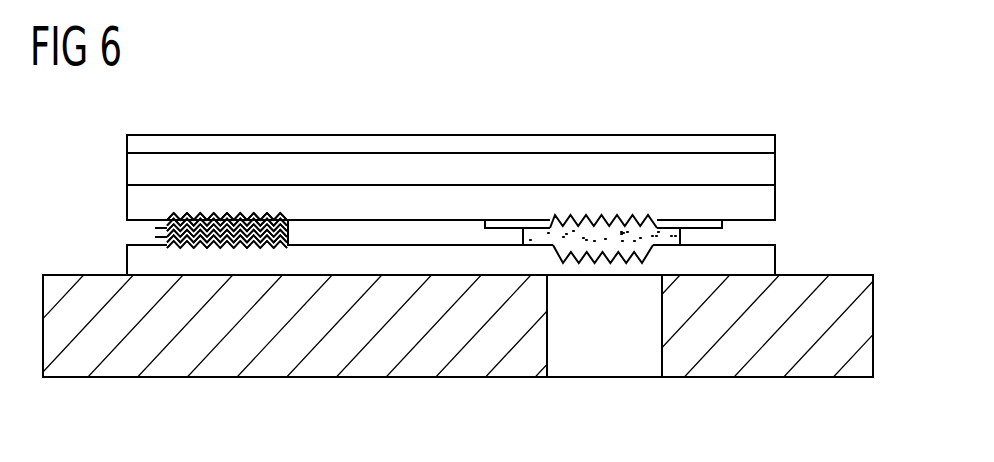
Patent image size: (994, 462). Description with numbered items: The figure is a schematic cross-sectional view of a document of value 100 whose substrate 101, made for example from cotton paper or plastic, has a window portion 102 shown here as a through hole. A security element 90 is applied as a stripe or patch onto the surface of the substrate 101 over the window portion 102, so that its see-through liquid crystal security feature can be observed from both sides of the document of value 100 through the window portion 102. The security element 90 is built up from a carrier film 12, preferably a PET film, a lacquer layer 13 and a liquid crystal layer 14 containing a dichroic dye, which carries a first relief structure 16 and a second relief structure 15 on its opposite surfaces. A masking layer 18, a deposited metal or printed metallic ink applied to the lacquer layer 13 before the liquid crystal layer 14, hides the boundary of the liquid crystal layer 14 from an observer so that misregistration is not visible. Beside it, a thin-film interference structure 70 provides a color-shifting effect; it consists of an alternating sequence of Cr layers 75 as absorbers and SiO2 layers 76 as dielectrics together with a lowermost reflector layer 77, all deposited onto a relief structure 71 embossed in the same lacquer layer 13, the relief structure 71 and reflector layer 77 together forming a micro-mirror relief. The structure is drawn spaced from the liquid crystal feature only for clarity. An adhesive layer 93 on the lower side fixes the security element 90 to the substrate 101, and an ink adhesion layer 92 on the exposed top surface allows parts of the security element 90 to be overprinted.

The document of value 100 is at (897, 151).
The security element 90 is at (848, 122).
The ink adhesion layer 92 is at (758, 146).
The carrier film 12 is at (758, 166).
The lacquer layer 13 is at (763, 205).
The liquid crystal layer 14 is at (673, 240).
The masking layer 18 is at (508, 221).
The first relief structure 16 is at (643, 212).
The second relief structure 15 is at (635, 264).
The adhesive layer 93 is at (763, 260).
The thin-film interference structure 70 is at (74, 180).
The relief structure 71 is at (248, 217).
The Cr layers 75 is at (165, 222).
The SiO2 layers 76 is at (167, 235).
The reflector layer 77 is at (167, 243).
The substrate 101 is at (875, 325).
The window portion 102 is at (585, 377).